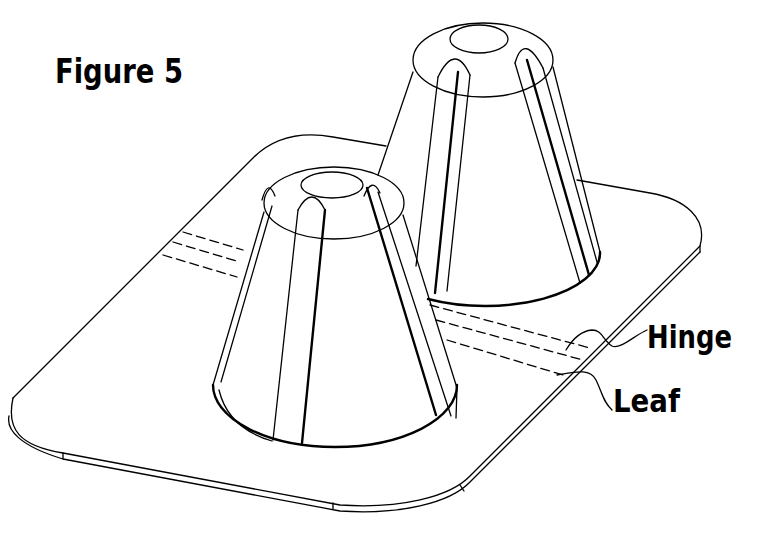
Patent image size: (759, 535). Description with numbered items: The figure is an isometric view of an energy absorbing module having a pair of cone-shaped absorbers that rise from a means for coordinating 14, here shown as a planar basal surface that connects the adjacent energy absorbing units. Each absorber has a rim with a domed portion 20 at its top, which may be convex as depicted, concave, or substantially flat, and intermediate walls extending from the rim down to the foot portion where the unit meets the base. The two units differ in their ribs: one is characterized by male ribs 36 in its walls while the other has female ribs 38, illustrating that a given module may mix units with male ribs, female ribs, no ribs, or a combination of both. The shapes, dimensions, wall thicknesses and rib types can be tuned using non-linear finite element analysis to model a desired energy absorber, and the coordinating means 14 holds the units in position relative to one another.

The means for coordinating 14 is at (134, 396).
The domed portion 20 is at (371, 272).
The male ribs 36 is at (432, 367).
The female ribs 38 is at (548, 113).